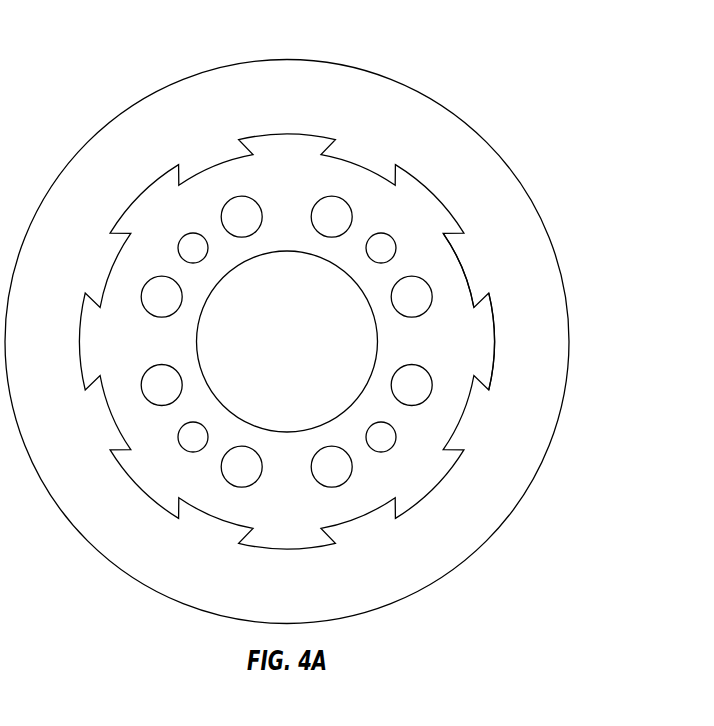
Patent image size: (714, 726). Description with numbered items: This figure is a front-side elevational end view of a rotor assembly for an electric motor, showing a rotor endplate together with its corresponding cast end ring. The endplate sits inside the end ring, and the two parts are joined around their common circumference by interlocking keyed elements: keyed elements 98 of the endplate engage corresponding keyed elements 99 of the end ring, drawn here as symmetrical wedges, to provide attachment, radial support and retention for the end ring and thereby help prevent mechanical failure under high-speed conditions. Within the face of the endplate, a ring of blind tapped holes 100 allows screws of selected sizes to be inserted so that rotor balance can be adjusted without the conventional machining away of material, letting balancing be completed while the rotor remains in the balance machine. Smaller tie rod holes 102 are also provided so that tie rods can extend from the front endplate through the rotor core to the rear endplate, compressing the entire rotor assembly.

The keyed elements of the end rings 99 is at (470, 267).
The keyed elements of the endplates 98 is at (493, 342).
The blind tapped holes 100 is at (432, 387).
The tie rod holes 102 is at (397, 438).